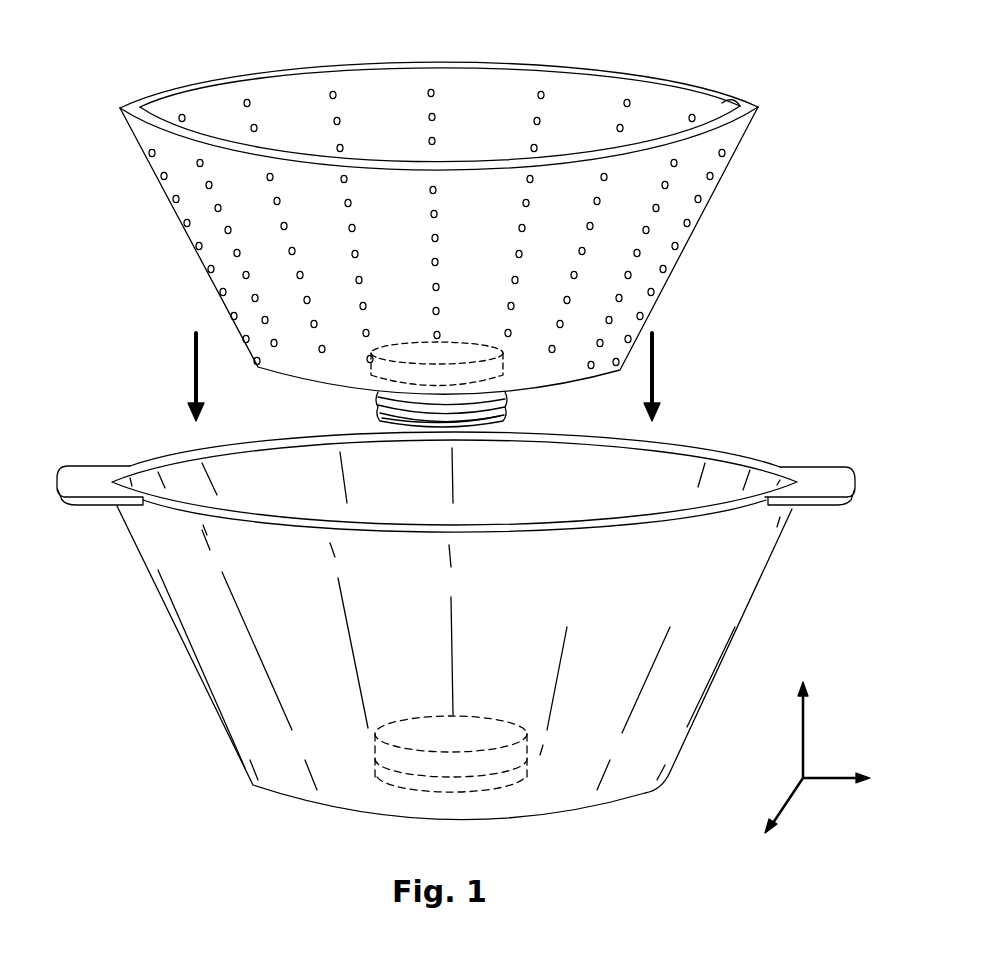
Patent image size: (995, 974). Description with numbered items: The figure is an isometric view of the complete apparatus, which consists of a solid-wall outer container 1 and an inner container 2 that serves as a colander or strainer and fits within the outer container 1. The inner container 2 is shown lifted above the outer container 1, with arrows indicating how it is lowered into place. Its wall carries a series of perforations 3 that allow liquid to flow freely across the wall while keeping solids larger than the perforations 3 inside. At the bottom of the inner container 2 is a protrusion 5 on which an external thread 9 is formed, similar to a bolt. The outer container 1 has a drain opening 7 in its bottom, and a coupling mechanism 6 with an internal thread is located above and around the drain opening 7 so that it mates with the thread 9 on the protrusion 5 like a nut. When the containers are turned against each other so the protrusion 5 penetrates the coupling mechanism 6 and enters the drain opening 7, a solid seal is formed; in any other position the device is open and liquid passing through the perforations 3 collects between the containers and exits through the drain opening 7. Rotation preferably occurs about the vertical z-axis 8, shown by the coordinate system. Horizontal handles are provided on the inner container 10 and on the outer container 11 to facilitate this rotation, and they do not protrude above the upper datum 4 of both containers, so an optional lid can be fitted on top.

The outer container 1 is at (218, 743).
The inner container 2 is at (149, 175).
The perforations 3 is at (264, 336).
The upper datum 4 is at (202, 87).
The protrusion 5 is at (522, 407).
The coupling mechanism 6 is at (367, 768).
The drain opening 7 is at (414, 798).
The vertical axis 8 is at (826, 722).
The external thread 9 is at (362, 416).
The inner container handle 10 is at (741, 94).
The outer container handle 11 is at (73, 458).